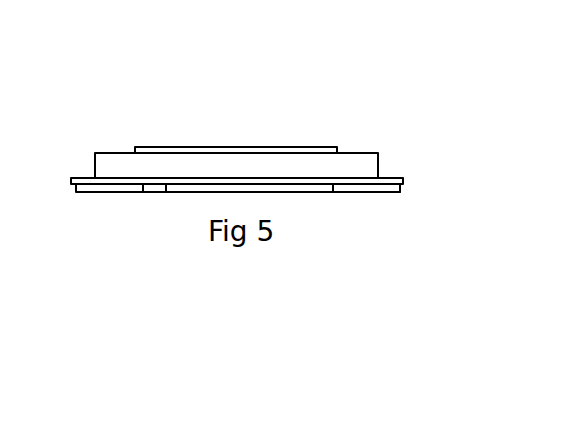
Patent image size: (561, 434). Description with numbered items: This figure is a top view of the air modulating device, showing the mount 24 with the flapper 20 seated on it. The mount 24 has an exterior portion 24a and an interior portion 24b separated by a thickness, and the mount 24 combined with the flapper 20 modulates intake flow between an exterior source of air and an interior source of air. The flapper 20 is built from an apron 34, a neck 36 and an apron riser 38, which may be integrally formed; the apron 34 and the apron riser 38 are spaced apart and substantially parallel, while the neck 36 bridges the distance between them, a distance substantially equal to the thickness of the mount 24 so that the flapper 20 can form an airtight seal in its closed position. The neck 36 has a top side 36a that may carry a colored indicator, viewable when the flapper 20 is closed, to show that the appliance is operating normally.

The flapper 20 is at (388, 192).
The mount 24 is at (395, 178).
The exterior portion 24a is at (403, 188).
The interior portion 24b is at (370, 148).
The apron 34 is at (92, 193).
The neck 36 is at (165, 186).
The top side 36a is at (312, 192).
The apron riser 38 is at (240, 147).